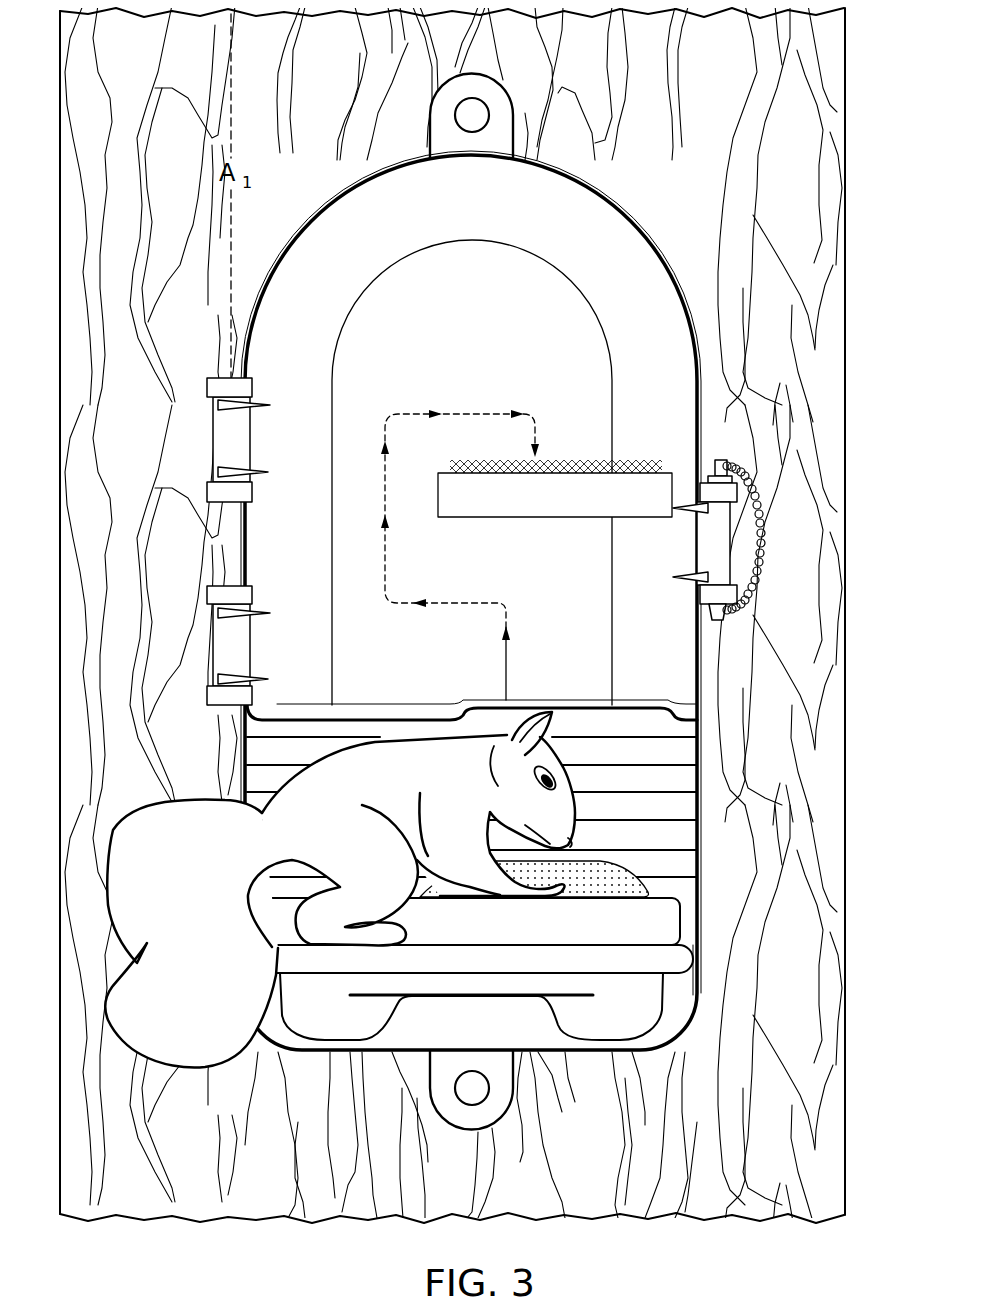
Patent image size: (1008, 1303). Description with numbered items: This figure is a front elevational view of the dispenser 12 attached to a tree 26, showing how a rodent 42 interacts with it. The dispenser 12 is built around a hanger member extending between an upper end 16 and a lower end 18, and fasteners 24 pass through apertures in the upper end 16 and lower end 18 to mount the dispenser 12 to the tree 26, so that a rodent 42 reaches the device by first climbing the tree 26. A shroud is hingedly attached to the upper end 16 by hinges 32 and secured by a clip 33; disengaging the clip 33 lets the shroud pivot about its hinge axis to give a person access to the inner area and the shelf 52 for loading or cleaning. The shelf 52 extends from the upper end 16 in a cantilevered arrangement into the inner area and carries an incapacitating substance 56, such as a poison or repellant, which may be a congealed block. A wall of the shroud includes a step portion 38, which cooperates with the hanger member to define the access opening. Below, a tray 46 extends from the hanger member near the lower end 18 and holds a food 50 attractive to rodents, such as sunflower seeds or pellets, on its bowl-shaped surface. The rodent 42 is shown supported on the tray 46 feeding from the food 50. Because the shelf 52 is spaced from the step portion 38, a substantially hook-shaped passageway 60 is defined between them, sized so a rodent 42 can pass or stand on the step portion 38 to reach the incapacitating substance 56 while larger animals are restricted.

The dispenser 12 is at (451, 597).
The upper end 16 is at (471, 556).
The lower end 18 is at (635, 1059).
The fasteners 24 is at (489, 115).
The tree 26 is at (808, 175).
The hinges 32 is at (212, 438).
The clip 33 is at (707, 548).
The step portion 38 is at (329, 736).
The rodent 42 is at (396, 795).
The tray 46 is at (683, 918).
The food 50 is at (622, 892).
The shelf 52 is at (597, 512).
The incapacitating substance 56 is at (568, 462).
The passageway 60 is at (462, 413).